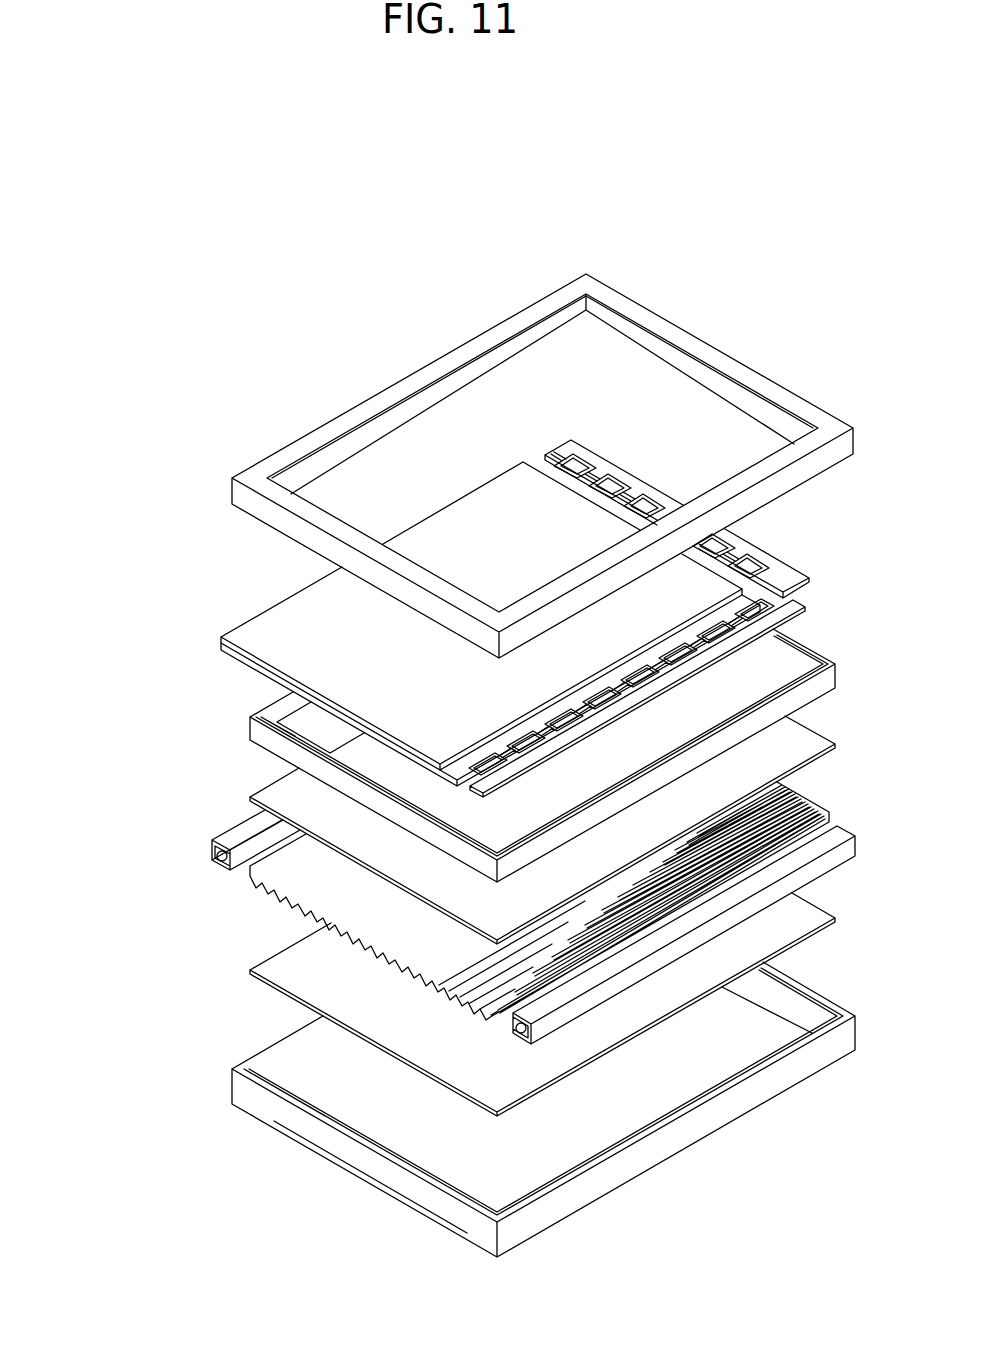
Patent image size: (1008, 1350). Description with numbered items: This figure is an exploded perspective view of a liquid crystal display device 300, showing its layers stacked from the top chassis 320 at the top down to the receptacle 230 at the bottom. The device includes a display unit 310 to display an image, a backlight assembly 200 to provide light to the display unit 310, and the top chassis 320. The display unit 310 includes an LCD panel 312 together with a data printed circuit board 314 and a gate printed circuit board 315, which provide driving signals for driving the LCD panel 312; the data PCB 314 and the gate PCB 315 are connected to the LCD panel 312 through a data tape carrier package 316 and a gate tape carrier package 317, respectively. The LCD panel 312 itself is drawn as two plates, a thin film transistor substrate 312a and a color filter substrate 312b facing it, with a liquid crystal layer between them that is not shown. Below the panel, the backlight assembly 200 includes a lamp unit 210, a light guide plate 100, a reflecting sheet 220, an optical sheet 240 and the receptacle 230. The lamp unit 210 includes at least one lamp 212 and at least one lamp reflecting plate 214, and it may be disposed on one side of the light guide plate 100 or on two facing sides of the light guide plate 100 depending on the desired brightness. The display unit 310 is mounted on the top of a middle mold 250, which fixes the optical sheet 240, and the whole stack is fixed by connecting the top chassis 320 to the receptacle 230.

The liquid crystal display device 300 is at (305, 277).
The display unit 310 is at (248, 604).
The LCD panel 312 is at (134, 616).
The thin film transistor substrate 312a is at (232, 651).
The color filter substrate 312b is at (229, 634).
The data printed circuit board 314 is at (757, 553).
The gate printed circuit board 315 is at (800, 597).
The data tape carrier package 316 is at (770, 566).
The gate tape carrier package 317 is at (777, 622).
The top chassis 320 is at (230, 495).
The backlight assembly 200 is at (78, 780).
The lamp unit 210 is at (134, 838).
The lamp 212 is at (225, 866).
The lamp reflecting plate 214 is at (212, 846).
The light guide plate 100 is at (250, 893).
The reflecting sheet 220 is at (270, 972).
The receptacle 230 is at (232, 1083).
The optical sheet 240 is at (252, 798).
The middle mold 250 is at (250, 720).